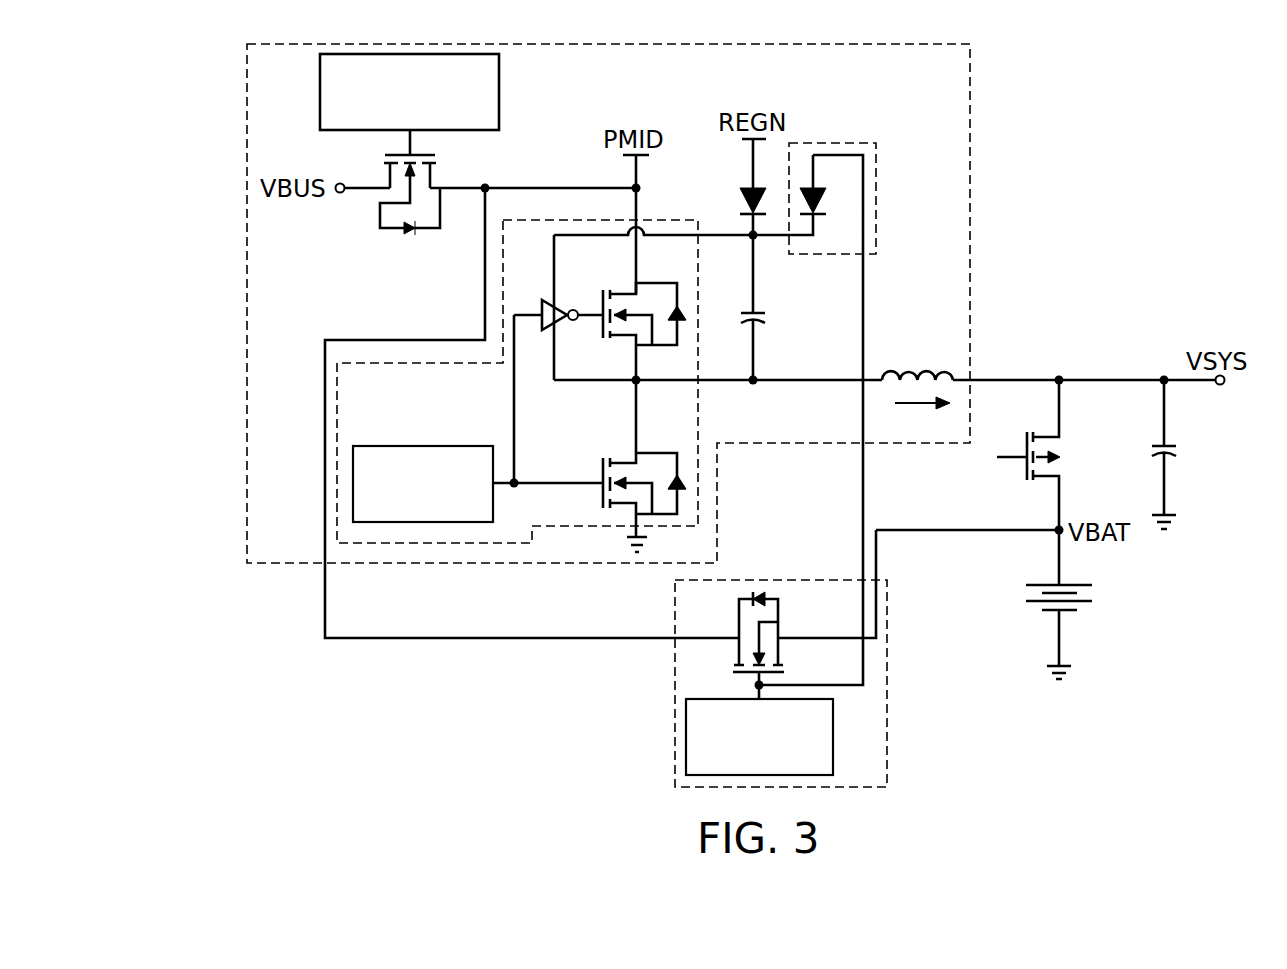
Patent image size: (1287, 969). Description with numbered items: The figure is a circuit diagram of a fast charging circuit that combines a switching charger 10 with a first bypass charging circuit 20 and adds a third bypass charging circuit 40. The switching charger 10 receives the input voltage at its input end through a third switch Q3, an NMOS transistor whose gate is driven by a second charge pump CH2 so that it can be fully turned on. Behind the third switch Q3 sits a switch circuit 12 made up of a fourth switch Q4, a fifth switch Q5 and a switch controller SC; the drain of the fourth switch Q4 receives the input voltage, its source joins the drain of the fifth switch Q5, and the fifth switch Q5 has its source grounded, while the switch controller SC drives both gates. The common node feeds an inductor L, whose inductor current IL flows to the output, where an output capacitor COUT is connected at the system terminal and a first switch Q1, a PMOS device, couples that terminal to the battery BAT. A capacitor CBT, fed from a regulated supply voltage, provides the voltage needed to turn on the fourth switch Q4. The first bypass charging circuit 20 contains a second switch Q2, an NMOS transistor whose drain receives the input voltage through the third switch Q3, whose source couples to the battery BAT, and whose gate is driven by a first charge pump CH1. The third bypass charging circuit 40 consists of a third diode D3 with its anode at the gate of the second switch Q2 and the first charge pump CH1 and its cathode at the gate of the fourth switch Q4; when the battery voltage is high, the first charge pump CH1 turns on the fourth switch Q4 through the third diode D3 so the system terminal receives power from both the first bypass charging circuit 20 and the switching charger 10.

The switching charger 10 is at (970, 125).
The switch circuit 12 is at (667, 220).
The first bypass charging circuit 20 is at (887, 727).
The third bypass charging circuit 40 is at (876, 198).
The first switch Q1 is at (1024, 455).
The second switch Q2 is at (781, 645).
The third switch Q3 is at (490, 182).
The fourth switch Q4 is at (632, 316).
The fifth switch Q5 is at (589, 466).
The third diode D3 is at (808, 420).
The capacitor CBT is at (779, 342).
The capacitor COUT is at (1201, 454).
The battery BAT is at (1085, 604).
The inductor L is at (917, 361).
The inductor current IL is at (922, 418).
The switch controller SC is at (423, 445).
The first charge pump CH1 is at (686, 736).
The second charge pump CH2 is at (499, 93).